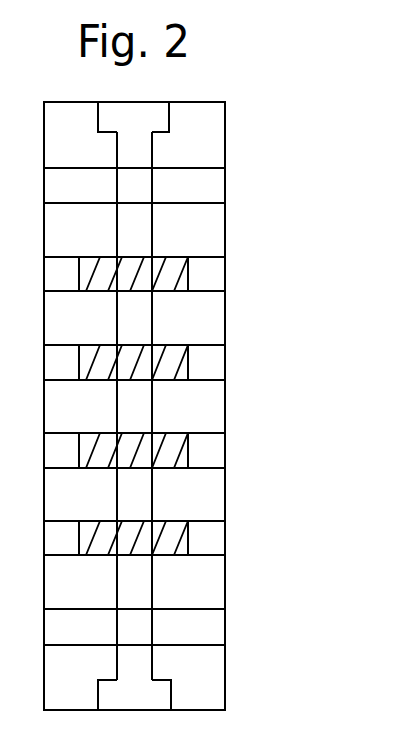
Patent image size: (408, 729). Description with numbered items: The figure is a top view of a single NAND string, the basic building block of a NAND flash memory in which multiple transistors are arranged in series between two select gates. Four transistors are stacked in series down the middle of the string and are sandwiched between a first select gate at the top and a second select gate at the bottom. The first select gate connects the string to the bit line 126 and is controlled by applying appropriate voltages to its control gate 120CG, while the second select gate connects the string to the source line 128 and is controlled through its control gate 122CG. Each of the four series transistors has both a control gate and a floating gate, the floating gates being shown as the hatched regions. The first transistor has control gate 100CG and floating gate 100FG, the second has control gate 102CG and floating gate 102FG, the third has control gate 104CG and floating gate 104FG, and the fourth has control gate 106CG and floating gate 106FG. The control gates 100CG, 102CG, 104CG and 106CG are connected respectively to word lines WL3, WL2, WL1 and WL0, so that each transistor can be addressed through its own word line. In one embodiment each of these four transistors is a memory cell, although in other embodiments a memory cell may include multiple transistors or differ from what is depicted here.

The bit line 126 is at (171, 118).
The source line 128 is at (172, 692).
The control gate 120CG is at (204, 168).
The control gate 122CG is at (207, 609).
The floating gate 100FG is at (178, 257).
The control gate 100CG is at (208, 257).
The floating gate 102FG is at (178, 345).
The control gate 102CG is at (208, 345).
The floating gate 104FG is at (178, 433).
The control gate 104CG is at (208, 433).
The floating gate 106FG is at (178, 521).
The control gate 106CG is at (208, 521).